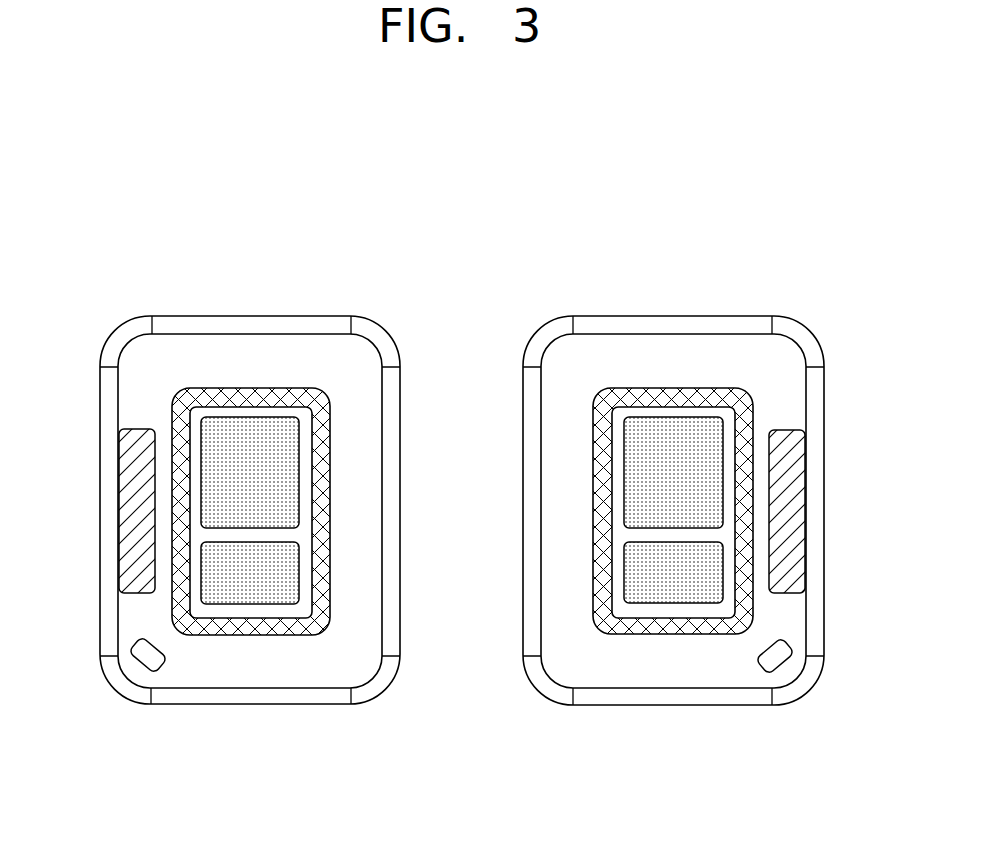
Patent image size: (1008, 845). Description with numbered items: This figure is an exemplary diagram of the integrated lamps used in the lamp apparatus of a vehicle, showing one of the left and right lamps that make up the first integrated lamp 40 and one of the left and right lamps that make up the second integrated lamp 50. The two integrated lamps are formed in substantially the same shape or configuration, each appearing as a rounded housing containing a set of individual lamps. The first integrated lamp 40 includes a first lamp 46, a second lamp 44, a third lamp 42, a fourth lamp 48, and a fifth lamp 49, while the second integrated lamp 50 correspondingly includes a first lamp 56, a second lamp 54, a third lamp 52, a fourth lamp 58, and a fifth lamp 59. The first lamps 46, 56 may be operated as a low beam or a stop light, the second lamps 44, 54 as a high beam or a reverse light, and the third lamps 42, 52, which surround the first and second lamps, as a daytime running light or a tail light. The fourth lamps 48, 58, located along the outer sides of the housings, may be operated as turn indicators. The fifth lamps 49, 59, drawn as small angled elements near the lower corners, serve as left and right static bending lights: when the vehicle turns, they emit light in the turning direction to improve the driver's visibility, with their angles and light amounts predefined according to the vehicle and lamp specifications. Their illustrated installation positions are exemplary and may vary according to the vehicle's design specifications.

The first integrated lamp 40 is at (392, 320).
The third lamp 42 is at (322, 433).
The second lamp 44 is at (280, 481).
The first lamp 46 is at (288, 572).
The fourth lamp 48 is at (138, 502).
The fifth lamp 49 is at (146, 657).
The second integrated lamp 50 is at (807, 318).
The third lamp 52 is at (627, 390).
The second lamp 54 is at (673, 440).
The first lamp 56 is at (665, 590).
The fourth lamp 58 is at (790, 497).
The fifth lamp 59 is at (778, 660).